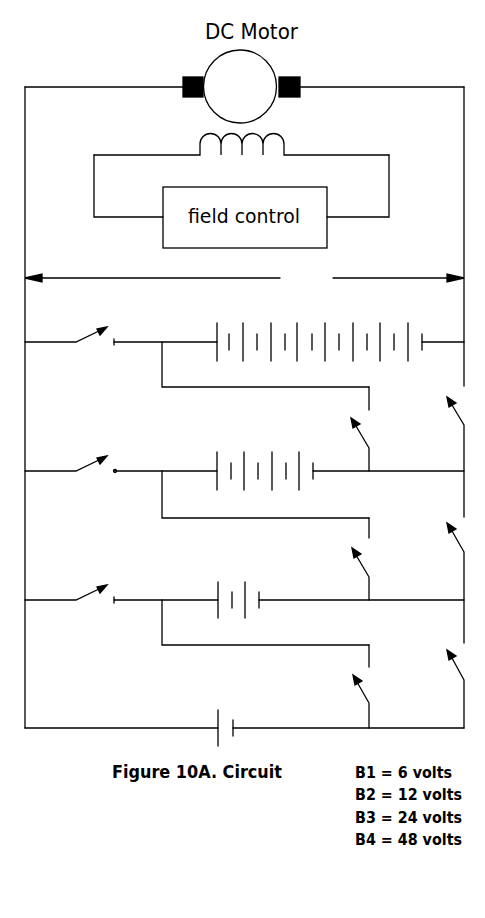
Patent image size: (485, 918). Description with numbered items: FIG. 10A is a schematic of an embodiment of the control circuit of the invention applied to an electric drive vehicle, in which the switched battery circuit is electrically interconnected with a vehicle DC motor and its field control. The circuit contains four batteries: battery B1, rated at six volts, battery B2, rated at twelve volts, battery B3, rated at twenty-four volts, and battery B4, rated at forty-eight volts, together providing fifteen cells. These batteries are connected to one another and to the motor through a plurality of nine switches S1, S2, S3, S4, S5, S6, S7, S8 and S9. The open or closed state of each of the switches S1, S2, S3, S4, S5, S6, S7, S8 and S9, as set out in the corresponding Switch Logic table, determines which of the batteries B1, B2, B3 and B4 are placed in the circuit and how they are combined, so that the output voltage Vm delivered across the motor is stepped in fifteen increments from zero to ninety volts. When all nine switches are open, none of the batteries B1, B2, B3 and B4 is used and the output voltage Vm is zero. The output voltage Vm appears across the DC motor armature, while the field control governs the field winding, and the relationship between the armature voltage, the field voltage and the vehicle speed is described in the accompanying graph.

The battery B1 is at (244, 712).
The battery B2 is at (289, 586).
The battery B3 is at (289, 455).
The battery B4 is at (289, 328).
The switch S1 is at (338, 686).
The switch S2 is at (443, 689).
The switch S3 is at (69, 617).
The switch S4 is at (340, 559).
The switch S5 is at (444, 583).
The switch S6 is at (71, 489).
The switch S7 is at (342, 429).
The switch S8 is at (443, 457).
The switch S9 is at (69, 360).
The output voltage Vm is at (244, 277).